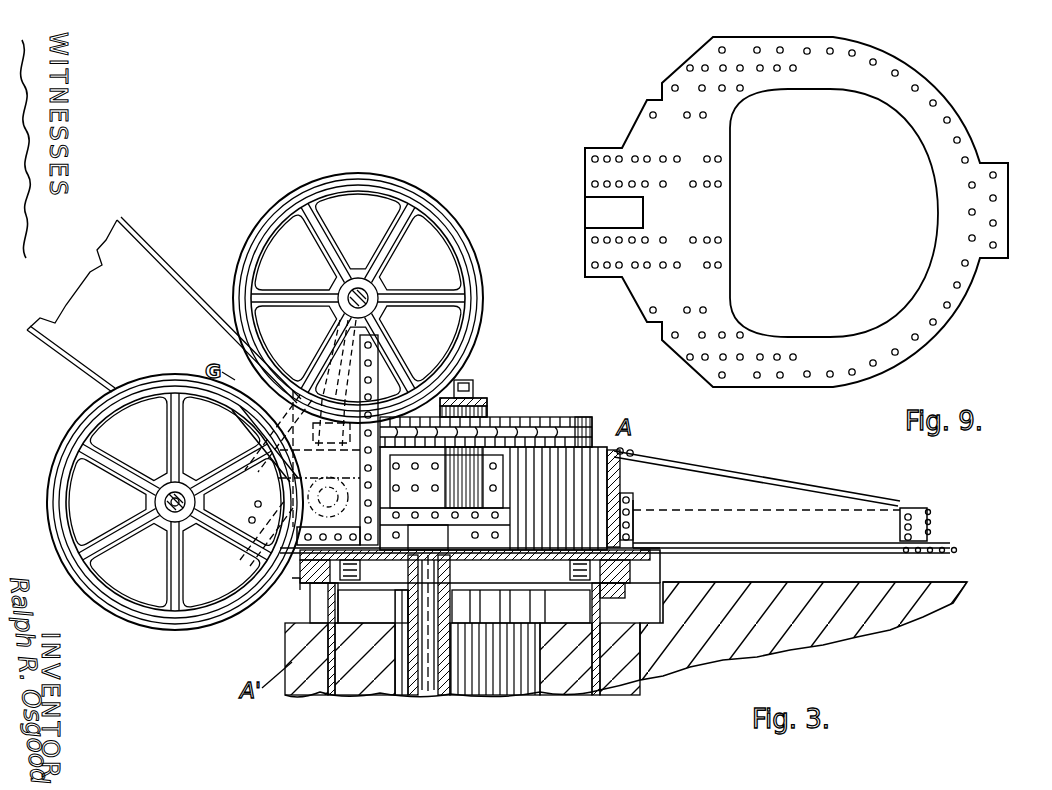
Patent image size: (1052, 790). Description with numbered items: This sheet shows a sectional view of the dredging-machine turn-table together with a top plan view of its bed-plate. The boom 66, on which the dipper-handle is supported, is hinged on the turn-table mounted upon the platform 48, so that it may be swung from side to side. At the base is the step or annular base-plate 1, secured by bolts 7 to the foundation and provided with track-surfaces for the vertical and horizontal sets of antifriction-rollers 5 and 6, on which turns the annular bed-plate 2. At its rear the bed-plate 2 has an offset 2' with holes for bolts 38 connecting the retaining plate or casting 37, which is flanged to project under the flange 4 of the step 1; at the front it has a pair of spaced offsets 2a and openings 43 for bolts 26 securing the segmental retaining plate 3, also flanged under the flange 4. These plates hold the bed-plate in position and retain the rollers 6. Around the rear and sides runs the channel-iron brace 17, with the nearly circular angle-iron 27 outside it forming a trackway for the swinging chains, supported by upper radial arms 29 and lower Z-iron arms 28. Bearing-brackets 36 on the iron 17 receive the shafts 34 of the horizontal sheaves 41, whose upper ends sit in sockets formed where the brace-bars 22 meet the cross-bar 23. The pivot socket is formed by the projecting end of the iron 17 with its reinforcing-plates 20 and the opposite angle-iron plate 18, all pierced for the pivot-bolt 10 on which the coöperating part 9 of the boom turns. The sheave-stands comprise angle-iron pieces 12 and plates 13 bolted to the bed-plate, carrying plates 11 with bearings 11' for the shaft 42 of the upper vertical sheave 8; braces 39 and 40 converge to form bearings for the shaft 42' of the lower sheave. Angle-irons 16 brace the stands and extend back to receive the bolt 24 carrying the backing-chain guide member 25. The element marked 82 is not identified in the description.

In FIG. 3, the step or annular base-plate 1 is at (480, 603).
In FIG. 9, the annular bed-plate 2 is at (820, 212).
In FIG. 3, the annular bed-plate 2 is at (519, 451).
In FIG. 9, the spaced offsets 2a is at (590, 236).
In FIG. 9, the offset 2' is at (1016, 197).
In FIG. 3, the segmental retaining plate or casting 3 is at (300, 578).
In FIG. 9, the flange 4 is at (997, 245).
In FIG. 3, the flange 4 is at (330, 590).
In FIG. 3, the vertical antifriction-rollers 5 is at (464, 606).
In FIG. 3, the horizontal antifriction-rollers 6 is at (312, 578).
In FIG. 3, the bolts 7 is at (300, 687).
In FIG. 3, the vertical sheave 8 is at (484, 284).
In FIG. 3, the coöperating part of the boom 9 is at (210, 428).
In FIG. 3, the pivot-bolt 10 is at (50, 497).
In FIG. 3, the plates or castings 11 is at (370, 297).
In FIG. 3, the bearings 11' is at (358, 265).
In FIG. 3, the angle-iron pieces 12 is at (240, 510).
In FIG. 3, the plates 13 is at (469, 441).
In FIG. 3, the angle-irons 16 is at (372, 520).
In FIG. 3, the channel-iron brace 17 is at (622, 482).
In FIG. 3, the angle-iron plate 18 is at (388, 494).
In FIG. 3, the reinforcing-plates 20 is at (506, 513).
In FIG. 3, the brace-bars 22 is at (482, 407).
In FIG. 3, the cross-bar 23 is at (488, 400).
In FIG. 3, the bolt 24 is at (450, 539).
In FIG. 3, the guide member 25 is at (506, 532).
In FIG. 3, the bolts 26 is at (292, 572).
In FIG. 3, the angle-iron 27 is at (930, 521).
In FIG. 3, the lower radial arms 28 is at (791, 524).
In FIG. 3, the upper radial arms 29 is at (760, 480).
In FIG. 3, the shafts 34 is at (472, 386).
In FIG. 3, the bearing-brackets 36 is at (505, 475).
In FIG. 3, the retaining plate or casting 37 is at (667, 590).
In FIG. 3, the bolts 38 is at (705, 562).
In FIG. 3, the brace 39 is at (260, 464).
In FIG. 3, the brace 40 is at (320, 340).
In FIG. 3, the horizontal sheaves 41 is at (562, 420).
In FIG. 3, the shaft 42 is at (385, 291).
In FIG. 3, the shaft 42' is at (145, 503).
In FIG. 9, the openings 43 is at (653, 112).
In FIG. 3, the platform 48 is at (815, 600).
In FIG. 3, the boom 66 is at (164, 310).
In FIG. 3, the connecting rod 82 is at (337, 385).